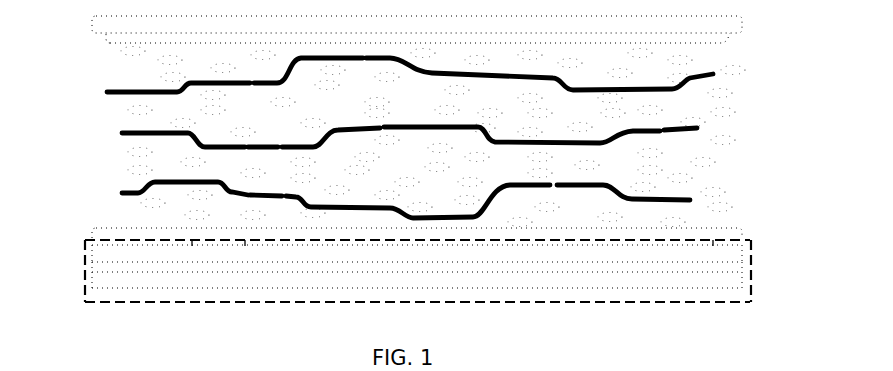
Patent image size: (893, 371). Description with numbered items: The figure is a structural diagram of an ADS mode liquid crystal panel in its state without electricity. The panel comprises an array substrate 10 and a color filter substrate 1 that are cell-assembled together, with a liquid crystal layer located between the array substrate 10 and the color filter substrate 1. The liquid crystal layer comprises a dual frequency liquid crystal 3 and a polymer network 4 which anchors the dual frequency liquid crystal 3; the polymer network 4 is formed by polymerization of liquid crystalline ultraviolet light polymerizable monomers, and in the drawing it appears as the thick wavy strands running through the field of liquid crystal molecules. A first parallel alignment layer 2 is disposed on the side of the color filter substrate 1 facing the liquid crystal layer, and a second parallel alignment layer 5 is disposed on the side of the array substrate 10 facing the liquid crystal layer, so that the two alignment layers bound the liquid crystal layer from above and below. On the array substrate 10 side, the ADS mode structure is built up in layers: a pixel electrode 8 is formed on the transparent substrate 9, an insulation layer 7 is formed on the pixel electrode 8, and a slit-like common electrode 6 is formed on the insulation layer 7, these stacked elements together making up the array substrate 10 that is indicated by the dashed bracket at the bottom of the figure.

The color filter substrate 1 is at (114, 26).
The first parallel alignment layer 2 is at (113, 41).
The dual frequency liquid crystal 3 is at (120, 50).
The polymer network 4 is at (110, 89).
The second parallel alignment layer 5 is at (108, 227).
The slit-like common electrode 6 is at (118, 243).
The insulation layer 7 is at (118, 257).
The pixel electrode 8 is at (118, 266).
The transparent substrate 9 is at (118, 281).
The array substrate 10 is at (752, 254).